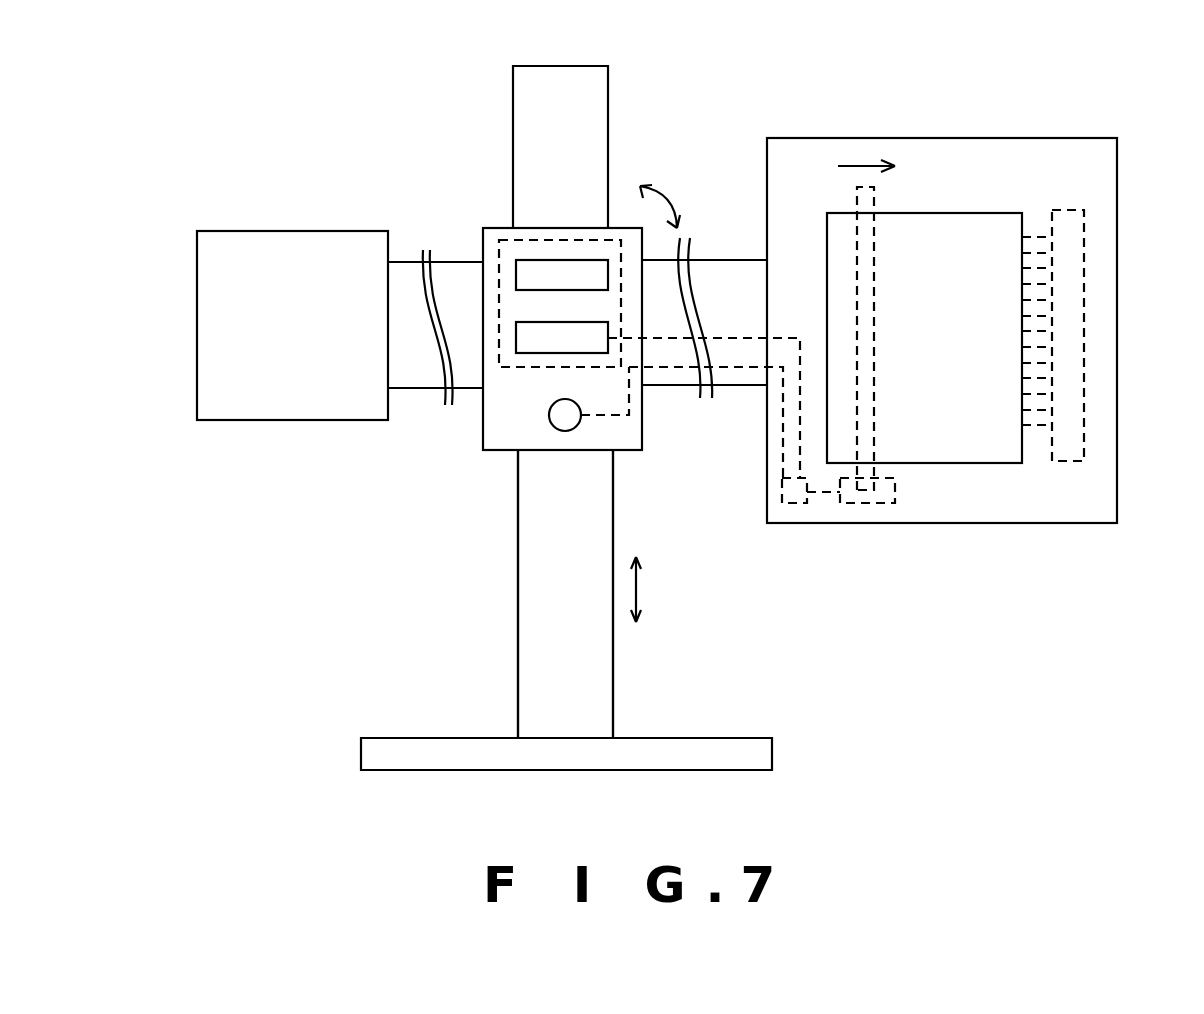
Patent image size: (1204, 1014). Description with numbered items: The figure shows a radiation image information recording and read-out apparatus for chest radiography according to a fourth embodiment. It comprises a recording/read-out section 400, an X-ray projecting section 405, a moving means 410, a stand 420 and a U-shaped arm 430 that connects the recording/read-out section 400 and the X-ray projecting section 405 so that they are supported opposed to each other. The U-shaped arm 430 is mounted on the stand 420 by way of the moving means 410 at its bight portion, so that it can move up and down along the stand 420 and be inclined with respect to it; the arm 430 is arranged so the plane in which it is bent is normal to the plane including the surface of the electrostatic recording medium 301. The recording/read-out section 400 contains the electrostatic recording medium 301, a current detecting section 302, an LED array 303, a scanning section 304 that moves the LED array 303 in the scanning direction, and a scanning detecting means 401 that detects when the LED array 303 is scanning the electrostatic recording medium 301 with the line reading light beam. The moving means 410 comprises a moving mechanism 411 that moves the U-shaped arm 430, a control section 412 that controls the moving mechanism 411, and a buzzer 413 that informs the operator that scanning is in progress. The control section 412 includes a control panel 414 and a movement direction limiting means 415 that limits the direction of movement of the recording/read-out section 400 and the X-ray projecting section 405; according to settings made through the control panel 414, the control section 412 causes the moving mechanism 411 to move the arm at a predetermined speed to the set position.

The recording/read-out section 400 is at (896, 121).
The electrostatic recording medium 301 is at (960, 213).
The current detecting section 302 is at (1084, 222).
The LED array 303 is at (874, 255).
The scanning section 304 is at (895, 497).
The scanning detecting means 401 is at (787, 503).
The X-ray projecting section 405 is at (322, 420).
The moving means 410 is at (632, 450).
The moving mechanism 411 is at (493, 452).
The control section 412 is at (505, 240).
The buzzer 413 is at (565, 431).
The control panel 414 is at (560, 260).
The movement direction limiting means 415 is at (550, 353).
The stand 420 is at (560, 66).
The U-shaped arm 430 is at (730, 260).